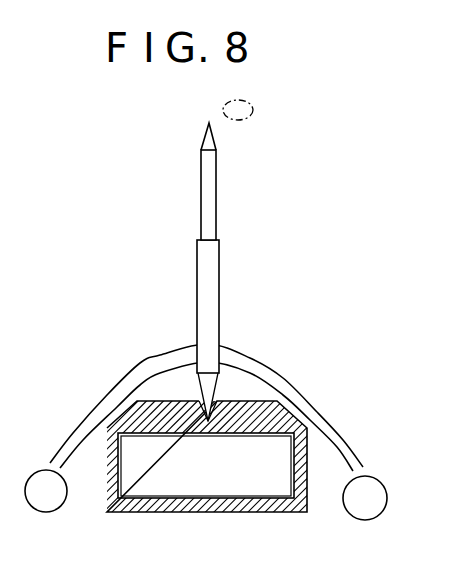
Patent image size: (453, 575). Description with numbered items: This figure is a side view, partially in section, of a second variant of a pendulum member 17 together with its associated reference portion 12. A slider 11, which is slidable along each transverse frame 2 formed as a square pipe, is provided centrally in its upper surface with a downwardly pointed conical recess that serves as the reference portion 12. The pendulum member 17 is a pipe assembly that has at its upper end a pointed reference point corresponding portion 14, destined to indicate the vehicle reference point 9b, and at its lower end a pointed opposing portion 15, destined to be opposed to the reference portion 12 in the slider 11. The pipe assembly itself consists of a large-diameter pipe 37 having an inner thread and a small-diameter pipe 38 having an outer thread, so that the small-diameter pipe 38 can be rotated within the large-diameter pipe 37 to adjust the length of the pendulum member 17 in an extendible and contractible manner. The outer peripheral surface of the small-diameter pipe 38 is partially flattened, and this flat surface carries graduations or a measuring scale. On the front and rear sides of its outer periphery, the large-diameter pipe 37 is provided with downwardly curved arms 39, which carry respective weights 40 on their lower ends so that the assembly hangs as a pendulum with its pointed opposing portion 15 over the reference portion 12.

The transverse frame 2 is at (163, 480).
The vehicle reference point 9b is at (255, 108).
The slider 11 is at (210, 510).
The reference portion 12 is at (210, 423).
The reference point corresponding portion 14 is at (208, 124).
The opposing portion 15 is at (207, 420).
The pendulum member 17 is at (170, 245).
The large-diameter pipe 37 is at (210, 298).
The small-diameter pipe 38 is at (210, 195).
The downwardly curved arms 39 is at (113, 392).
The weights 40 is at (52, 495).